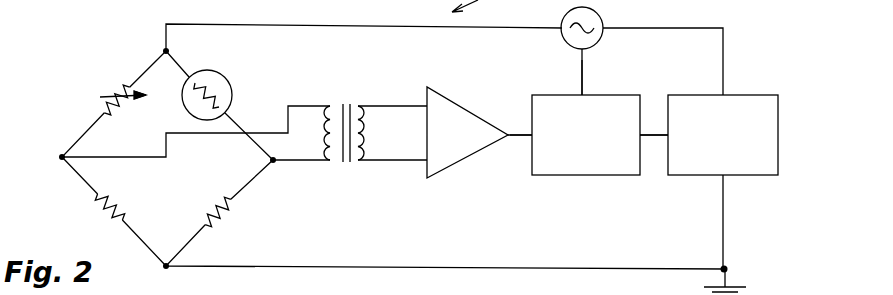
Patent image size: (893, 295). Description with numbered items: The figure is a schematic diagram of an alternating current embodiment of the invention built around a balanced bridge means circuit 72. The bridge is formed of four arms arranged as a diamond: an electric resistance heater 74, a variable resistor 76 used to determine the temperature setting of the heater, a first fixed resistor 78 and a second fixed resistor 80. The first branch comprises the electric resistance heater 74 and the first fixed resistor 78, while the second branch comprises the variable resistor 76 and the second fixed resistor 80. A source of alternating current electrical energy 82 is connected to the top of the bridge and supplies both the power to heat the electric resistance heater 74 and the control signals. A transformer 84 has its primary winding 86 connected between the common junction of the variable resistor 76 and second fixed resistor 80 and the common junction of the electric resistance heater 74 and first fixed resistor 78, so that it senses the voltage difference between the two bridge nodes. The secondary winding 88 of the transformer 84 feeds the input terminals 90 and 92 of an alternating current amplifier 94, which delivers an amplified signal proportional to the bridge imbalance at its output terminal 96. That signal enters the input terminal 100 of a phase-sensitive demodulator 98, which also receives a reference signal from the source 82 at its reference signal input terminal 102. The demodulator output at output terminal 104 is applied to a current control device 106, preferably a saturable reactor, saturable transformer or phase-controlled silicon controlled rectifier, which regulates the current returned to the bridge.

The balanced bridge means circuit 72 is at (265, 187).
The electric resistance heater 74 is at (187, 73).
The variable resistor 76 is at (126, 91).
The first fixed resistor 78 is at (235, 217).
The second fixed resistor 80 is at (89, 206).
The source of alternating current electrical energy 82 is at (601, 21).
The transformer 84 is at (348, 97).
The primary winding 86 is at (310, 133).
The secondary winding 88 is at (392, 133).
The input terminal 90 is at (426, 166).
The input terminal 92 is at (427, 100).
The alternating current amplifier 94 is at (441, 92).
The output terminal 96 is at (508, 131).
The phase-sensitive demodulator 98 is at (536, 95).
The input terminal 100 is at (529, 140).
The reference signal input terminal 102 is at (589, 94).
The output terminal 104 is at (645, 145).
The current control device 106 is at (739, 96).